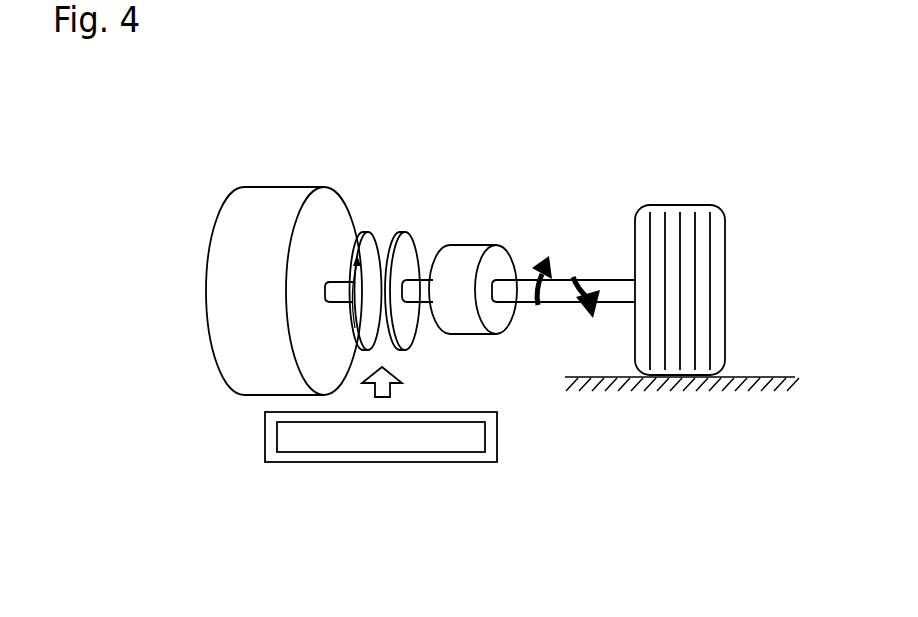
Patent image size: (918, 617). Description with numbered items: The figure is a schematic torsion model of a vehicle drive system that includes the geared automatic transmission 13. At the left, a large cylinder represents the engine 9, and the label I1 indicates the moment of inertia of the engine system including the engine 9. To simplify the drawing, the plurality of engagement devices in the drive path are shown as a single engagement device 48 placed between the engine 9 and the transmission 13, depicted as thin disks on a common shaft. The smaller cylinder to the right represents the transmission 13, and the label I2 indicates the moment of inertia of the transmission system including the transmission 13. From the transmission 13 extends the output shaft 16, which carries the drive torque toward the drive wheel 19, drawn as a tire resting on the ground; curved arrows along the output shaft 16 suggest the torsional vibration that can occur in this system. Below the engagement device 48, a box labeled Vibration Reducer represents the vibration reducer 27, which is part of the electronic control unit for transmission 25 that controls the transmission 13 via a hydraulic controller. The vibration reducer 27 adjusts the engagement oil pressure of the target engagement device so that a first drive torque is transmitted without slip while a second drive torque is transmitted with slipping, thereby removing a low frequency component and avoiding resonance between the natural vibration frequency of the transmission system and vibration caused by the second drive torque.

The engine 9 is at (227, 255).
The engagement device 48 is at (392, 213).
The transmission 13 is at (468, 327).
The output shaft 16 is at (616, 283).
The drive wheel 19 is at (713, 243).
The electronic control unit for transmission 25 is at (265, 446).
The vibration reducer 27 is at (486, 438).
The moment of inertia of engine system I1 is at (305, 162).
The moment of inertia of transmission system I2 is at (497, 232).